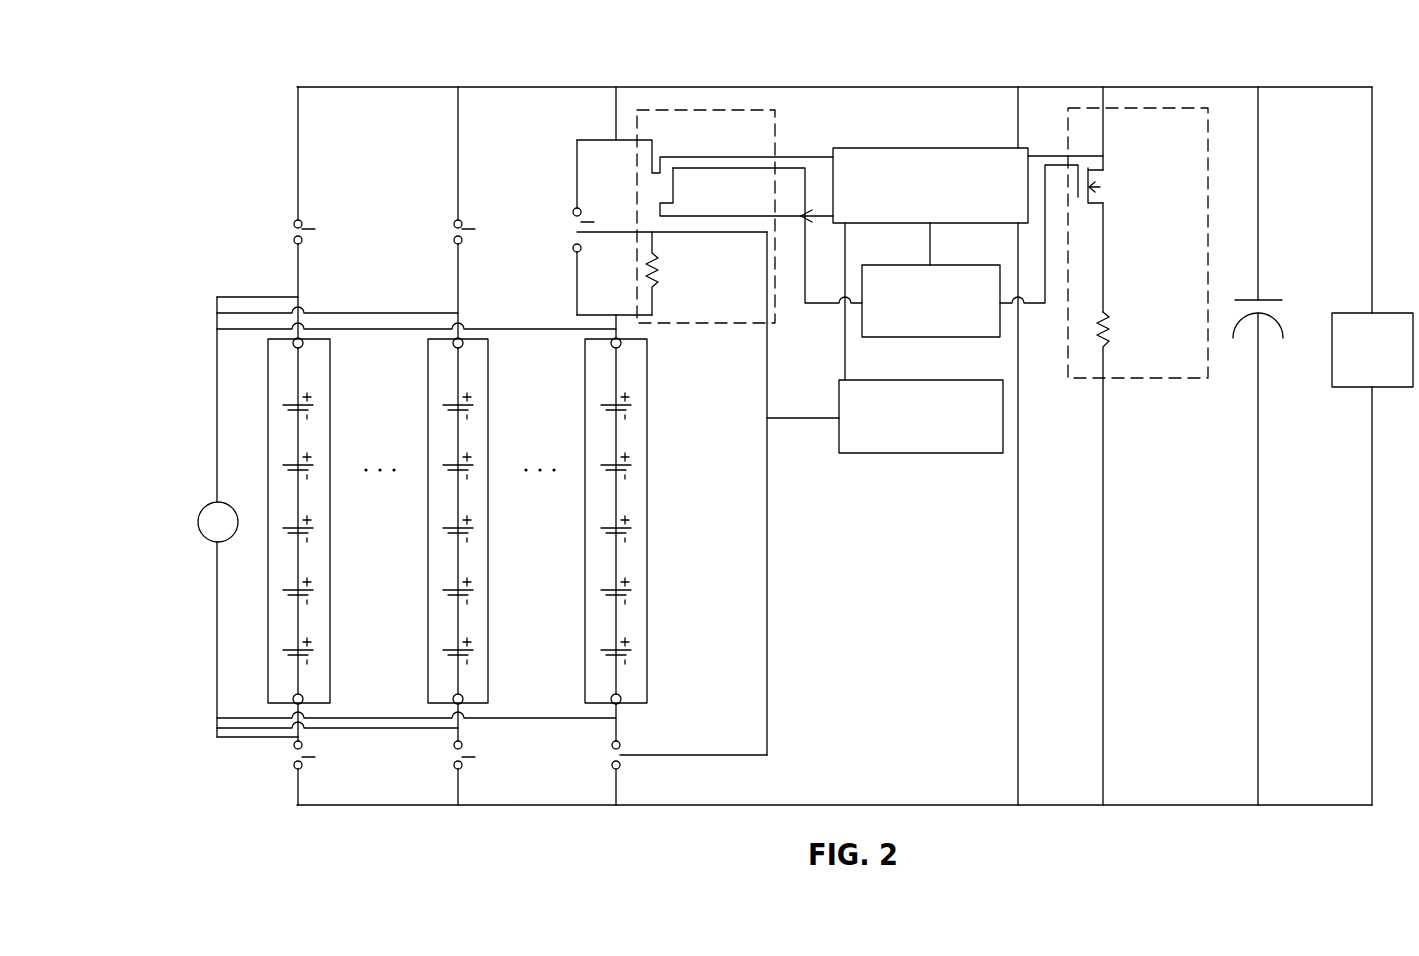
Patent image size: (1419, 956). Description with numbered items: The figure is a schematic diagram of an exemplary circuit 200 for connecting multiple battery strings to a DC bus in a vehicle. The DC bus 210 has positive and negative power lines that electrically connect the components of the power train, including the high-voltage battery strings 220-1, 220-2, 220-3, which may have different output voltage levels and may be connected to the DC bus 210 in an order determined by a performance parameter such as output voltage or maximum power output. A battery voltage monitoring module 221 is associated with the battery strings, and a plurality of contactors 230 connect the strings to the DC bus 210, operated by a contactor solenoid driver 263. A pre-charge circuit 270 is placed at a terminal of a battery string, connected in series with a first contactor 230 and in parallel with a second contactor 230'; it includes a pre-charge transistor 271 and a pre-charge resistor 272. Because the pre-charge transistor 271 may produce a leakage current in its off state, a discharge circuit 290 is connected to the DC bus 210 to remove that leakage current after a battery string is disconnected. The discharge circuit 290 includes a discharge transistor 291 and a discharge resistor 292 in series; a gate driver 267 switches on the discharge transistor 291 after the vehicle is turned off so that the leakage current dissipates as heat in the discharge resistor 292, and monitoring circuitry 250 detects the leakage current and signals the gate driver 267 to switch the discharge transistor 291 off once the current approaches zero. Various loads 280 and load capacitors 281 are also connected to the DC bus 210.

The circuit 200 is at (869, 31).
The DC bus 210 is at (514, 829).
The battery string 220-1 is at (657, 556).
The battery string 220-2 is at (498, 552).
The battery string 220-3 is at (338, 552).
The battery voltage monitoring module 221 is at (200, 505).
The contactor 230 is at (455, 446).
The second contactor 230' is at (554, 227).
The monitoring circuitry 250 is at (968, 446).
The contactor solenoid driver 263 is at (885, 493).
The gate driver 267 is at (970, 251).
The pre-charge circuit 270 is at (714, 76).
The pre-charge transistor 271 is at (667, 187).
The pre-charge resistor 272 is at (688, 288).
The load 280 is at (1372, 446).
The load capacitor 281 is at (1282, 293).
The discharge circuit 290 is at (1152, 76).
The discharge transistor 291 is at (1112, 186).
The discharge resistor 292 is at (1138, 346).